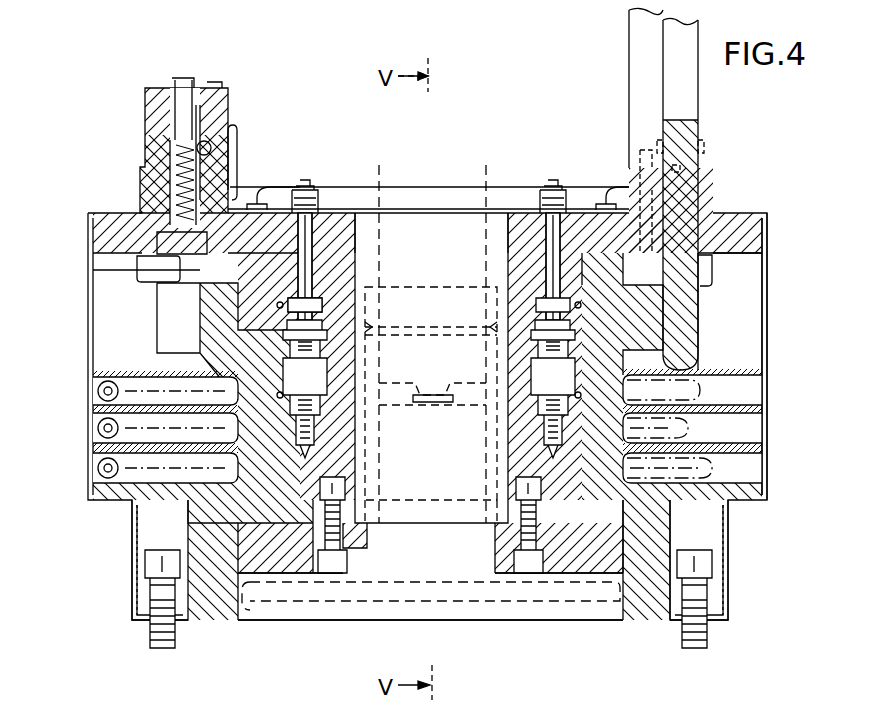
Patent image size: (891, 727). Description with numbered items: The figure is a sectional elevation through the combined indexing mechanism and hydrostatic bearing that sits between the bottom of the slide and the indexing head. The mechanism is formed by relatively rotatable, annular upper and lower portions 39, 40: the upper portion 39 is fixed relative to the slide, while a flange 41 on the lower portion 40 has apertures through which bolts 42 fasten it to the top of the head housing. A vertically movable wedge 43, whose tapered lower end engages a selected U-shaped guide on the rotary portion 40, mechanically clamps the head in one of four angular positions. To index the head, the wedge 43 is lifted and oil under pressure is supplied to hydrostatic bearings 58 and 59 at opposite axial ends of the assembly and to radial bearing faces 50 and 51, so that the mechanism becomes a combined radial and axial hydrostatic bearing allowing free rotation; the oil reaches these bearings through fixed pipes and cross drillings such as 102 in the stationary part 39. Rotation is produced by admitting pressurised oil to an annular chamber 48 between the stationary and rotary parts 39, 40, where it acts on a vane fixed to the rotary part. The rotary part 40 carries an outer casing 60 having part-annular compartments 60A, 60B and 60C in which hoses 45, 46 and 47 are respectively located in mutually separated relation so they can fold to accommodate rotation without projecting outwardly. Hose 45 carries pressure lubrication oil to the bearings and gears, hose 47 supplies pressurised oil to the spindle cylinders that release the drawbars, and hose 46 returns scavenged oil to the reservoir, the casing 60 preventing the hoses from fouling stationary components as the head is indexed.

The upper portion 39 is at (526, 215).
The lower portion 40 is at (650, 605).
The flange 41 is at (730, 590).
The bolts 42 is at (710, 638).
The wedge 43 is at (678, 305).
The hose 45 is at (98, 470).
The hose 46 is at (98, 429).
The hose 47 is at (98, 391).
The annular chamber 48 is at (290, 395).
The radial bearing face 50 is at (292, 318).
The radial bearing face 51 is at (330, 468).
The hydrostatic bearing 58 is at (210, 272).
The hydrostatic bearing 59 is at (270, 522).
The outer casing 60 is at (770, 300).
The part-annular compartment 60A is at (755, 393).
The part-annular compartment 60B is at (755, 435).
The part-annular compartment 60C is at (755, 474).
The cross drilling 102 is at (565, 300).